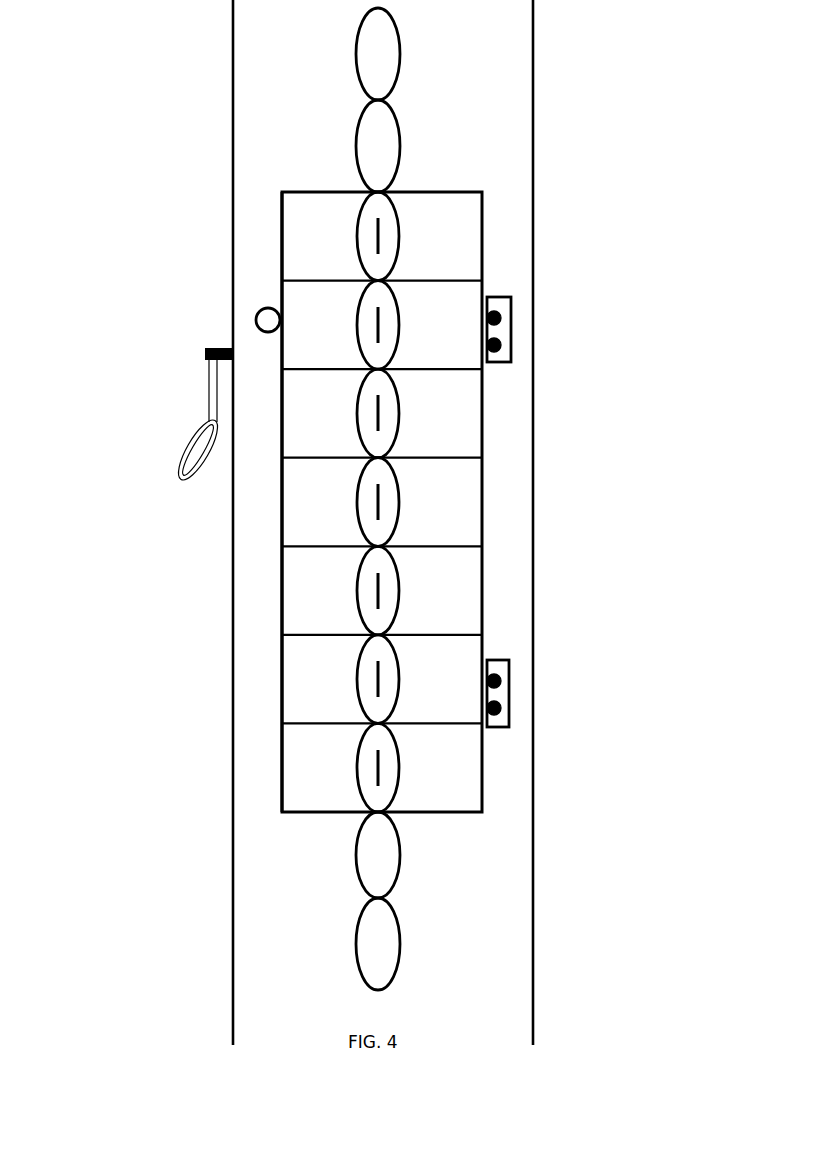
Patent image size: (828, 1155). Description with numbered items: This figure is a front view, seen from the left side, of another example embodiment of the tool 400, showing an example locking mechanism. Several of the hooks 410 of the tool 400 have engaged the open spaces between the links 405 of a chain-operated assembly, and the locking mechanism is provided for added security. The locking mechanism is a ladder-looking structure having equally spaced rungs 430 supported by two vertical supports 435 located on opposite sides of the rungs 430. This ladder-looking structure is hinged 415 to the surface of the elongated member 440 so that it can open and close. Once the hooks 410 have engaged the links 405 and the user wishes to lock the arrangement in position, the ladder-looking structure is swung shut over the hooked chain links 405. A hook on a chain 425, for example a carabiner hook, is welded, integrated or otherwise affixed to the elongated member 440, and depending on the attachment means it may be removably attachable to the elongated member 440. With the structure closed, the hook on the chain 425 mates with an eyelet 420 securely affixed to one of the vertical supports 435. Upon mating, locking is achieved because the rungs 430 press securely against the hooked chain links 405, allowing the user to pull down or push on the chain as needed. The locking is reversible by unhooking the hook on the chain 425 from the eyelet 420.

The tool 400 is at (117, 60).
The chain link 405 is at (358, 511).
The hook 410 is at (372, 415).
The hinge 415 is at (512, 322).
The eyelet 420 is at (256, 320).
The hook on a chain 425 is at (208, 416).
The rungs 430 is at (436, 190).
The vertical supports 435 is at (282, 597).
The elongated member 440 is at (268, 733).